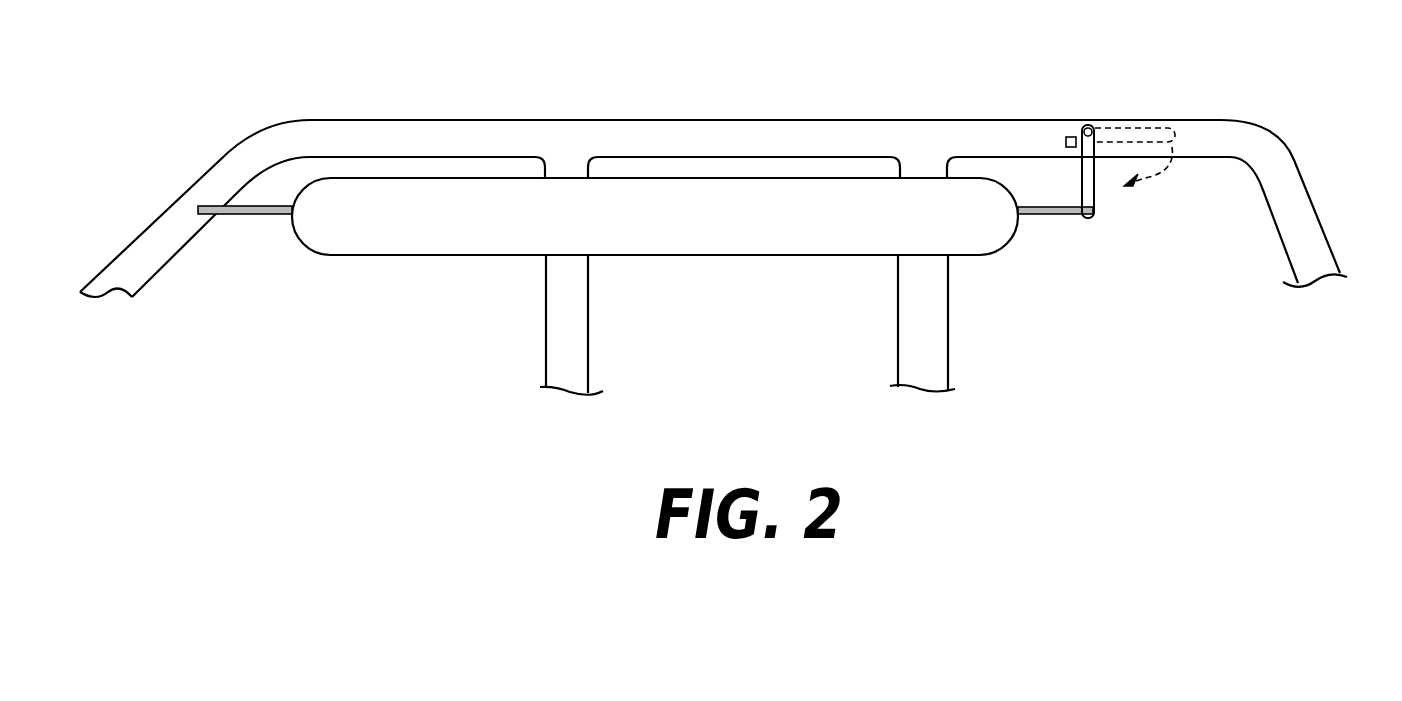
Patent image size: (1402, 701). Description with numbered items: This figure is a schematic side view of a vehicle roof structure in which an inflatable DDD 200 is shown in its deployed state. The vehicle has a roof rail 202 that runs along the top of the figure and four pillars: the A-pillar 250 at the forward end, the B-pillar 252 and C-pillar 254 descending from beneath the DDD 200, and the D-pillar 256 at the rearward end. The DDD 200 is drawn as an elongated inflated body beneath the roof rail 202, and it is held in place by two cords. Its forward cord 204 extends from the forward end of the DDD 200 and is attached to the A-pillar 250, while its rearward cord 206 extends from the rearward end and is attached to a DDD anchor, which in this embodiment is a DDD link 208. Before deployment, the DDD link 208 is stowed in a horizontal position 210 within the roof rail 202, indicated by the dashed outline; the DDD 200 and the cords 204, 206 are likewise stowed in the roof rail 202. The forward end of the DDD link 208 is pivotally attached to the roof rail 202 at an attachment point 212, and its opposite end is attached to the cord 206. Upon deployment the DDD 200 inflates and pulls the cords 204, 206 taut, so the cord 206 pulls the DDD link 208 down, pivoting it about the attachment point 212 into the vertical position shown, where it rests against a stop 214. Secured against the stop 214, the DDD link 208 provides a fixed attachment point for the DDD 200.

The DDD 200 is at (768, 223).
The roof rail 202 is at (458, 137).
The forward cord 204 is at (273, 212).
The rearward cord 206 is at (1058, 213).
The DDD link 208 is at (1097, 190).
The horizontal position 210 is at (1152, 118).
The attachment point 212 is at (1088, 127).
The stop 214 is at (1071, 137).
The A-pillar 250 is at (153, 263).
The B-pillar 252 is at (565, 340).
The C-pillar 254 is at (937, 340).
The D-pillar 256 is at (1302, 215).